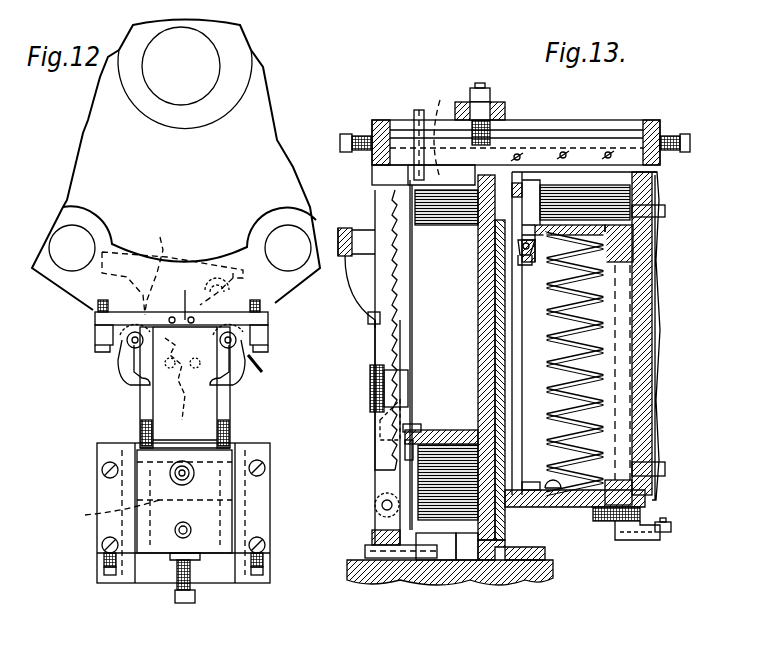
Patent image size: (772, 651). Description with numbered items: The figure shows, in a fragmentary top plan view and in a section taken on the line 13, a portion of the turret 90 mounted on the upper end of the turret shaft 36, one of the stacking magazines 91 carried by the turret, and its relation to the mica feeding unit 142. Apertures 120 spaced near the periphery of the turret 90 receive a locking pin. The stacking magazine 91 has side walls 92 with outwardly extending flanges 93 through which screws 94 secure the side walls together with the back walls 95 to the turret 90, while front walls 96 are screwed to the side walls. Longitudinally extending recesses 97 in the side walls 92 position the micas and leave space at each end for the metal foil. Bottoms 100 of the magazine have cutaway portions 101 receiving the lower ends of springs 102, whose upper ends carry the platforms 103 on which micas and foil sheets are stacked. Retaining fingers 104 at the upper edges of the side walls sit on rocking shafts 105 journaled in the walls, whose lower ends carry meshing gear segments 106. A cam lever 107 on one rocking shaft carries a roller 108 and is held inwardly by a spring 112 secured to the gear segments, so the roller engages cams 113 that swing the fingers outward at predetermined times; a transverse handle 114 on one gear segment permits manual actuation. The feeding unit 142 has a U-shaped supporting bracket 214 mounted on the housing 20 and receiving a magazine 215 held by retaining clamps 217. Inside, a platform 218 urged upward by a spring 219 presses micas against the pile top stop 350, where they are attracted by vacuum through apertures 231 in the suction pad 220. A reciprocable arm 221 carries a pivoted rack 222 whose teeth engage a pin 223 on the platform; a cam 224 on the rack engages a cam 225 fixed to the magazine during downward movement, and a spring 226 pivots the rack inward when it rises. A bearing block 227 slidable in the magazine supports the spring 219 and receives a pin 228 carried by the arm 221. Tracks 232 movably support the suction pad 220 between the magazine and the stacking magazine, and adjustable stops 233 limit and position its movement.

In FIG. 12, the turret shaft 36 is at (208, 63).
In FIG. 12, the turret 90 is at (275, 140).
In FIG. 13, the turret 90 is at (656, 442).
In FIG. 12, the apertures 120 is at (76, 234).
In FIG. 12, the cams 113 is at (163, 263).
In FIG. 12, the roller 108 is at (228, 262).
In FIG. 13, the roller 108 is at (671, 532).
In FIG. 12, the cam lever 107 is at (181, 299).
In FIG. 13, the cam lever 107 is at (642, 540).
In FIG. 12, the section line 13 is at (198, 307).
In FIG. 12, the back walls 95 is at (95, 318).
In FIG. 13, the back walls 95 is at (640, 320).
In FIG. 12, the flanges 93 is at (97, 333).
In FIG. 12, the screws 94 is at (100, 350).
In FIG. 12, the rocking shafts 105 is at (130, 350).
In FIG. 13, the rocking shafts 105 is at (625, 392).
In FIG. 12, the retaining fingers 104 is at (143, 425).
In FIG. 12, the spring 112 is at (185, 387).
In FIG. 12, the gear segments 106 is at (181, 379).
In FIG. 13, the gear segments 106 is at (600, 525).
In FIG. 12, the side walls 92 is at (140, 430).
In FIG. 12, the recesses 97 is at (150, 440).
In FIG. 12, the handle 114 is at (293, 371).
In FIG. 12, the stacking magazines 91 is at (232, 428).
In FIG. 13, the stacking magazines 91 is at (695, 185).
In FIG. 12, the mica feeding unit 142 is at (82, 536).
In FIG. 12, the front walls 96 is at (258, 465).
In FIG. 12, the track 232 is at (258, 500).
In FIG. 13, the track 232 is at (563, 140).
In FIG. 12, the suction pad 220 is at (108, 575).
In FIG. 13, the suction pad 220 is at (413, 150).
In FIG. 12, the pile top stop 350 is at (150, 528).
In FIG. 13, the pile top stop 350 is at (400, 200).
In FIG. 12, the adjustable stops 233 is at (178, 598).
In FIG. 13, the adjustable stops 233 is at (355, 132).
In FIG. 13, the apertures 231 is at (467, 126).
In FIG. 13, the spring 226 is at (355, 280).
In FIG. 13, the cam 225 is at (398, 443).
In FIG. 13, the retaining clamps 217 is at (400, 380).
In FIG. 13, the platform 218 is at (510, 440).
In FIG. 13, the pin 223 is at (420, 432).
In FIG. 13, the rack 222 is at (415, 395).
In FIG. 13, the cam 224 is at (415, 412).
In FIG. 13, the spring 219 is at (462, 530).
In FIG. 13, the bearing block 227 is at (440, 556).
In FIG. 13, the pin 228 is at (395, 558).
In FIG. 13, the reciprocable arm 221 is at (370, 533).
In FIG. 13, the magazine 215 is at (498, 560).
In FIG. 13, the housing 20 is at (360, 570).
In FIG. 13, the supporting bracket 214 is at (530, 575).
In FIG. 13, the springs 102 is at (595, 375).
In FIG. 13, the platforms 103 is at (625, 262).
In FIG. 13, the cutaway portions 101 is at (538, 507).
In FIG. 13, the bottoms 100 is at (572, 508).